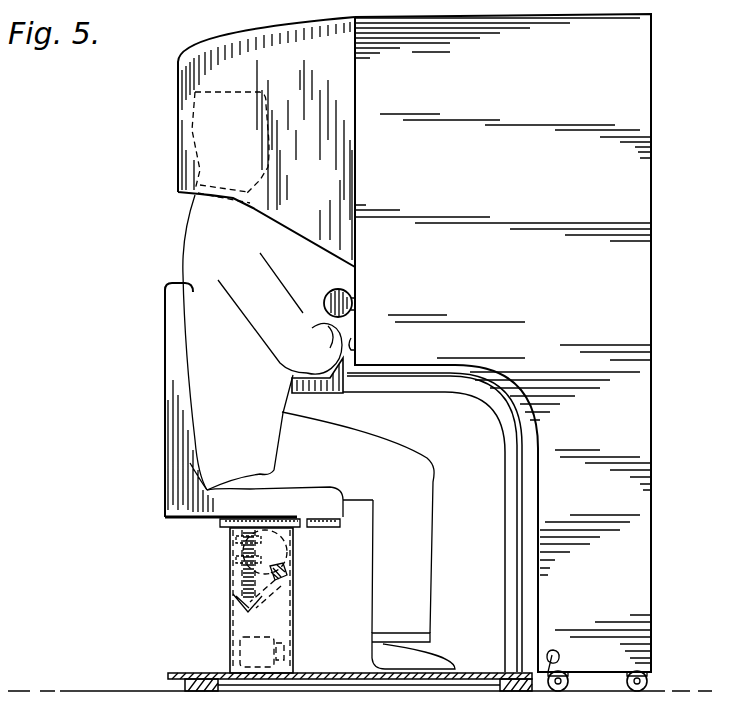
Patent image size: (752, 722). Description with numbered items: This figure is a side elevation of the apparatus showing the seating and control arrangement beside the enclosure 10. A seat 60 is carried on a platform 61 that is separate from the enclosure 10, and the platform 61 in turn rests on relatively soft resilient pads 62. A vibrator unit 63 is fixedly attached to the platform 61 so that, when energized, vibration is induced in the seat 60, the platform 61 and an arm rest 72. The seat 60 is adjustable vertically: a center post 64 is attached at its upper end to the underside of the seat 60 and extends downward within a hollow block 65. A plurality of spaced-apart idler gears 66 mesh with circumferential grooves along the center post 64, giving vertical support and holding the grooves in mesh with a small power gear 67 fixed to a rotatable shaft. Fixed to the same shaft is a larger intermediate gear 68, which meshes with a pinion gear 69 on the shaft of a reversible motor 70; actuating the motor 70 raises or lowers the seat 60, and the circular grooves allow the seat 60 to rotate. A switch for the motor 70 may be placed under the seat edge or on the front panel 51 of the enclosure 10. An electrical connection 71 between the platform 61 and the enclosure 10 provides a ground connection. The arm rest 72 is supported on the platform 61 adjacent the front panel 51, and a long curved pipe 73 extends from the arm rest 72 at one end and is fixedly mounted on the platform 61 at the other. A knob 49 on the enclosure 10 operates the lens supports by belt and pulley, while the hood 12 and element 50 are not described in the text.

The enclosure 10 is at (511, 142).
The hood 12 is at (352, 90).
The knob 49 is at (347, 292).
The ball socket 50 is at (352, 307).
The front panel 51 is at (355, 343).
The seat 60 is at (162, 426).
The platform 61 is at (211, 672).
The resilient pads 62 is at (188, 686).
The vibrator unit 63 is at (258, 640).
The center post 64 is at (240, 578).
The hollow block 65 is at (293, 606).
The idler gears 66 is at (238, 558).
The power gear 67 is at (258, 550).
The intermediate gear 68 is at (283, 567).
The pinion gear 69 is at (288, 582).
The reversible motor 70 is at (235, 595).
The electrical connection 71 is at (560, 660).
The arm rest 72 is at (323, 390).
The curved pipe 73 is at (508, 486).